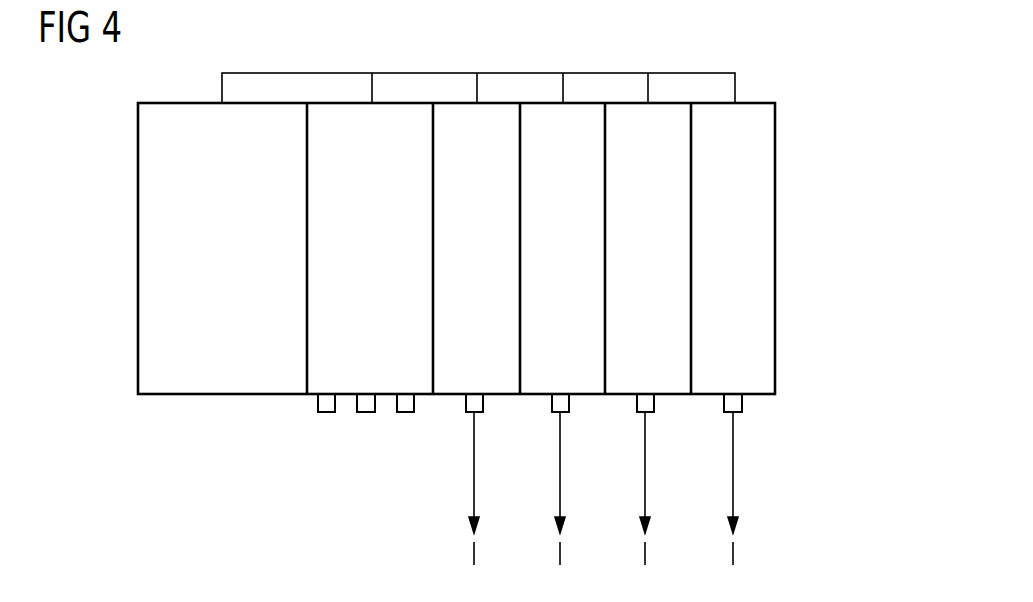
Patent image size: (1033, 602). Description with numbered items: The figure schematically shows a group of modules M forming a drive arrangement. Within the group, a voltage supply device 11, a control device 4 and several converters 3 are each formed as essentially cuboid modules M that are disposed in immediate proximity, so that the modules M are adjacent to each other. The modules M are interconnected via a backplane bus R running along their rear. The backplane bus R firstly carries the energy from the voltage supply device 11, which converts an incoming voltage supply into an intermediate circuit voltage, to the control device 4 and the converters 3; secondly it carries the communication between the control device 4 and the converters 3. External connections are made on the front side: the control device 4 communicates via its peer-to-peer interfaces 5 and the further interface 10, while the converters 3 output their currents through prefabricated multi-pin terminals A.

The voltage supply device 11 is at (195, 118).
The control device 4 is at (342, 118).
The converter 3 is at (458, 118).
The peer-to-peer interface 5 is at (326, 412).
The further interface 10 is at (366, 412).
The backplane bus R is at (735, 88).
The module M is at (775, 240).
The multi-pin terminal A is at (552, 394).